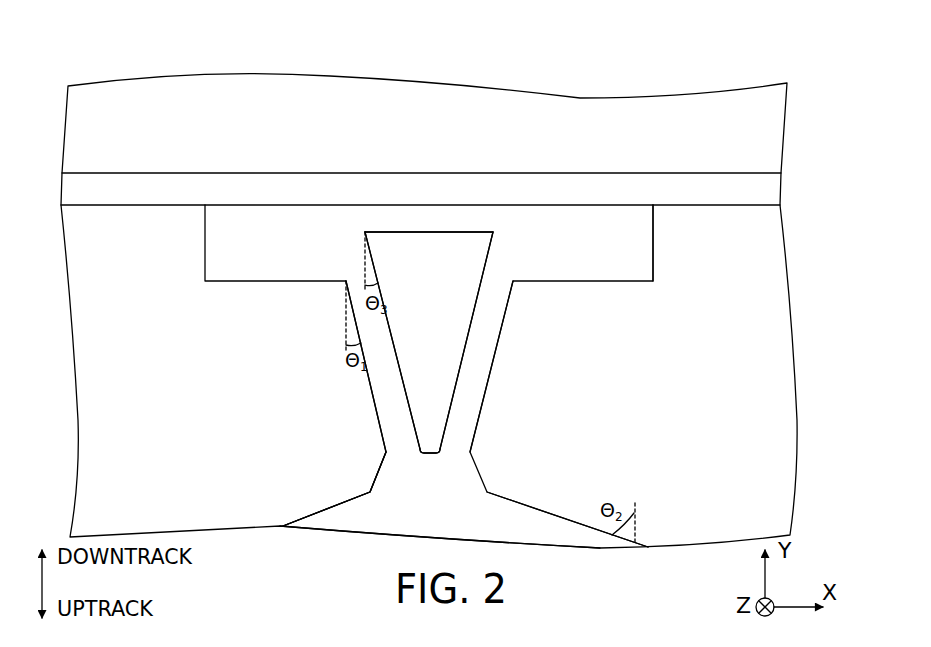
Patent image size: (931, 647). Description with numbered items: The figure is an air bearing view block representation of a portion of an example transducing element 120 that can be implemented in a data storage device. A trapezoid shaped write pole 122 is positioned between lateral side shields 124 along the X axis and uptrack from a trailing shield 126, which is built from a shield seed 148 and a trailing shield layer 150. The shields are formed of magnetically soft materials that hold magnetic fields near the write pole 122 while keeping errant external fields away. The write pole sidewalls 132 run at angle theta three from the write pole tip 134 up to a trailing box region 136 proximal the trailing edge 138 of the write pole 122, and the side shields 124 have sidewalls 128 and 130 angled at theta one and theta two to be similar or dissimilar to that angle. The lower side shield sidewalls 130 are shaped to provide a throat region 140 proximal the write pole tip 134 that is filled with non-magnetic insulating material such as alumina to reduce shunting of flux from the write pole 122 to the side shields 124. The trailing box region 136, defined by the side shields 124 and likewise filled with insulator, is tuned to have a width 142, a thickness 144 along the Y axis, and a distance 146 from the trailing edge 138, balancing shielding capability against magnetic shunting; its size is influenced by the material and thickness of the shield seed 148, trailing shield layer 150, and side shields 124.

The transducing element 120 is at (770, 66).
The write pole 122 is at (447, 335).
The side shields 124 is at (108, 232).
The trailing shield 126 is at (810, 87).
The side shield sidewalls 128 is at (374, 395).
The side shield sidewalls 130 is at (368, 491).
The write pole sidewalls 132 is at (450, 400).
The write pole tip 134 is at (431, 458).
The trailing box region 136 is at (646, 238).
The trailing edge 138 is at (445, 233).
The throat region 140 is at (338, 539).
The width 142 is at (653, 67).
The thickness 144 is at (537, 207).
The distance 146 is at (363, 233).
The shield seed 148 is at (107, 199).
The trailing shield layer 150 is at (107, 142).